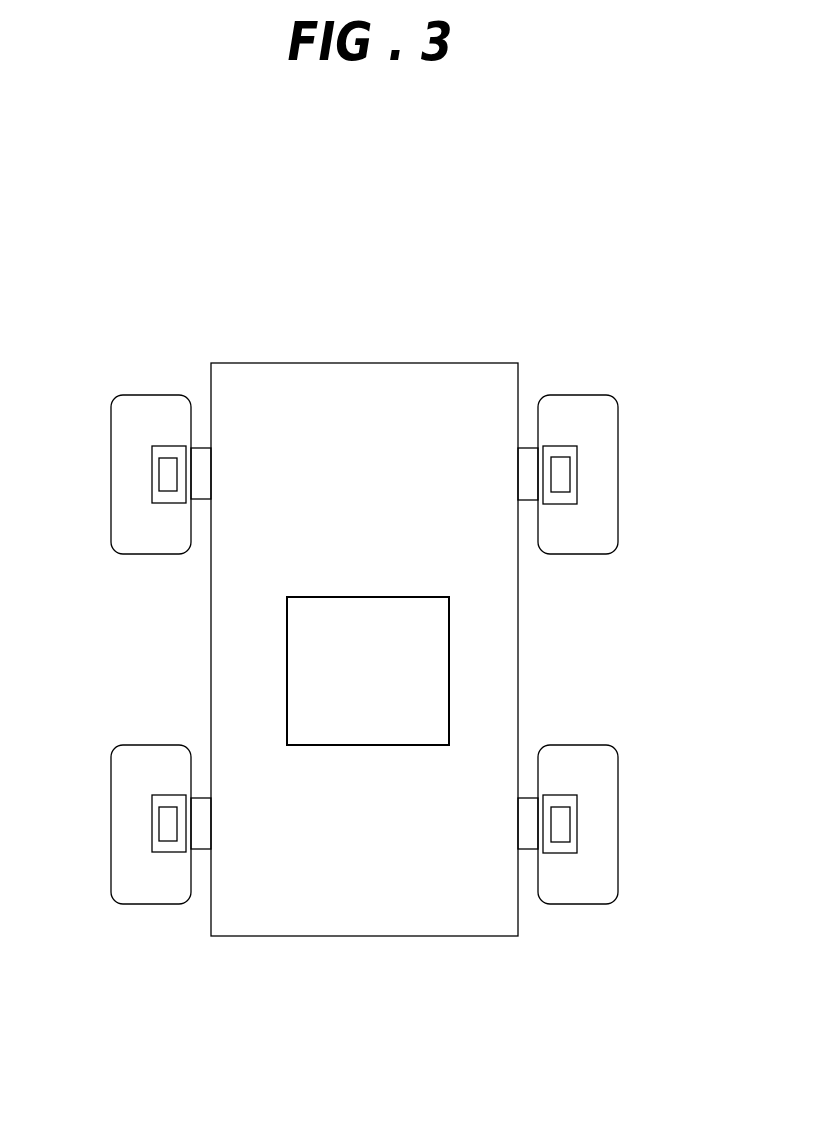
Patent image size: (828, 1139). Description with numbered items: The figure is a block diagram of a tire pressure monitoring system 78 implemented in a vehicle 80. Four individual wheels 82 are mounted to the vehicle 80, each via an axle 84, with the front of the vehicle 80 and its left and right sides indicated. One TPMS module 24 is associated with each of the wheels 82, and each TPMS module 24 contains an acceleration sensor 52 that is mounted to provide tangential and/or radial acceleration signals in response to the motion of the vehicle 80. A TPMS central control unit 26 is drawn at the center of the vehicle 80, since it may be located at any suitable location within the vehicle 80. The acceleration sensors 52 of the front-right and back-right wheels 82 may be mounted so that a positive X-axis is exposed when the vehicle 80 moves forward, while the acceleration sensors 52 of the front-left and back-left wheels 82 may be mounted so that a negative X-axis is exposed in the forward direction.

The tire pressure monitoring system 78 is at (464, 308).
The vehicle 80 is at (297, 363).
The wheel 82 is at (146, 396).
The axle 84 is at (201, 448).
The TPMS module 24 is at (152, 448).
The acceleration sensor 52 is at (162, 473).
The TPMS central control unit 26 is at (370, 597).